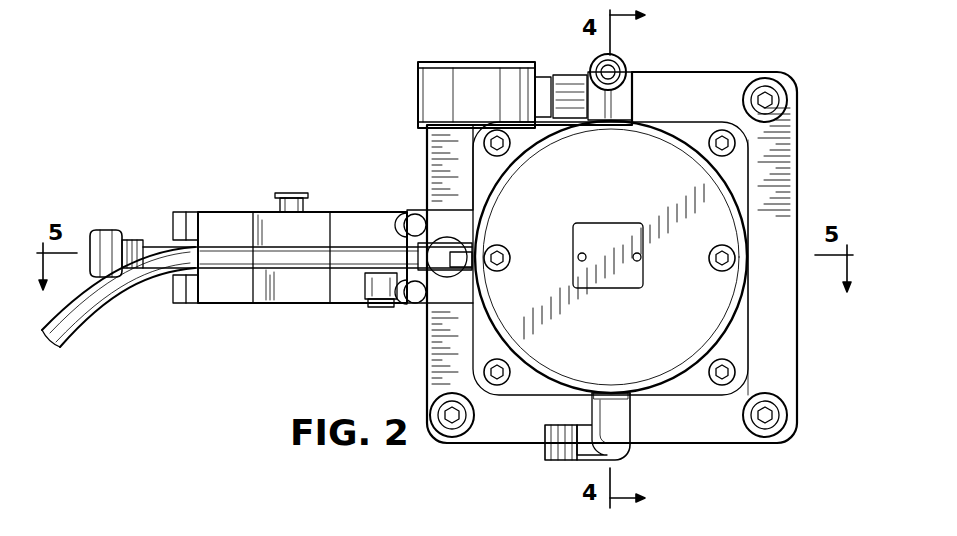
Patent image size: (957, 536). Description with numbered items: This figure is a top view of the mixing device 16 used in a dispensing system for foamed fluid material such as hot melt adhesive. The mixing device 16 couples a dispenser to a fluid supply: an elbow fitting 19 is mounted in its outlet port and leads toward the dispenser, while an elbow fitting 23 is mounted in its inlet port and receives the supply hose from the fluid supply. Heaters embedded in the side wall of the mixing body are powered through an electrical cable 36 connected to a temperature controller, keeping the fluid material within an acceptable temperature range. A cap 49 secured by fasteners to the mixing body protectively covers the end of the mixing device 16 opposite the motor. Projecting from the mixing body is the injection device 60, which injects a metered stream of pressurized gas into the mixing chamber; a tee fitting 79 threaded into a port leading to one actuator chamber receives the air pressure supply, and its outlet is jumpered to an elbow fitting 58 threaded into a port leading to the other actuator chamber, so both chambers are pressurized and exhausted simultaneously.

The mixing device 16 is at (682, 66).
The elbow fitting 19 is at (592, 68).
The elbow fitting 23 is at (630, 450).
The electrical cable 36 is at (78, 323).
The cap 49 is at (673, 317).
The elbow fitting 58 is at (363, 287).
The injection device 60 is at (232, 200).
The tee fitting 79 is at (297, 192).